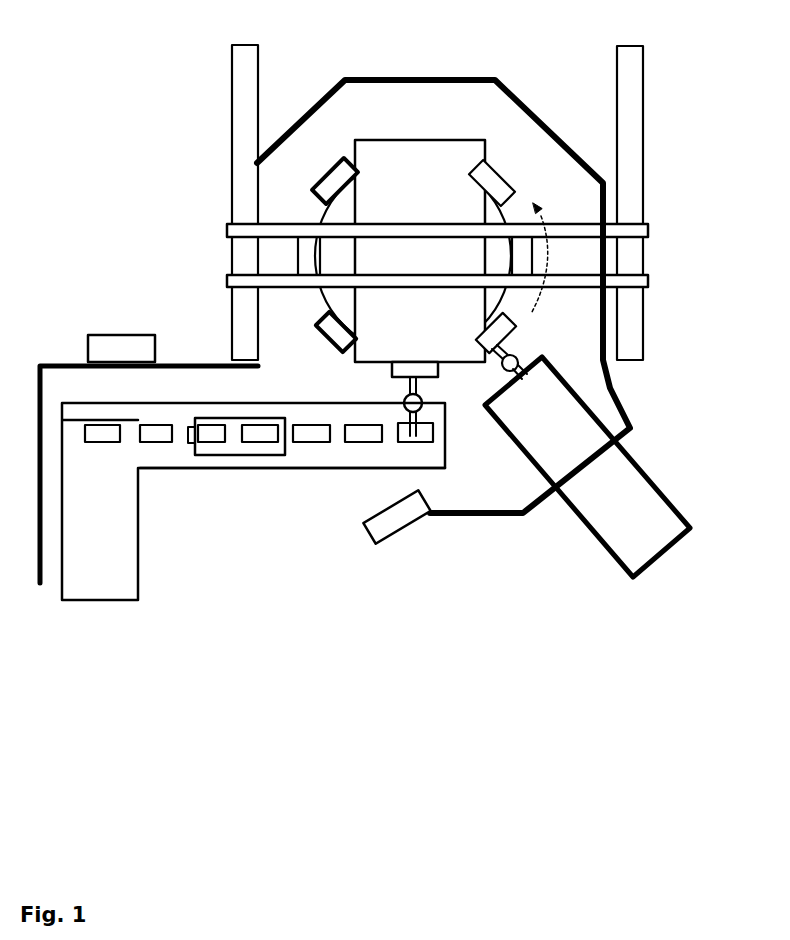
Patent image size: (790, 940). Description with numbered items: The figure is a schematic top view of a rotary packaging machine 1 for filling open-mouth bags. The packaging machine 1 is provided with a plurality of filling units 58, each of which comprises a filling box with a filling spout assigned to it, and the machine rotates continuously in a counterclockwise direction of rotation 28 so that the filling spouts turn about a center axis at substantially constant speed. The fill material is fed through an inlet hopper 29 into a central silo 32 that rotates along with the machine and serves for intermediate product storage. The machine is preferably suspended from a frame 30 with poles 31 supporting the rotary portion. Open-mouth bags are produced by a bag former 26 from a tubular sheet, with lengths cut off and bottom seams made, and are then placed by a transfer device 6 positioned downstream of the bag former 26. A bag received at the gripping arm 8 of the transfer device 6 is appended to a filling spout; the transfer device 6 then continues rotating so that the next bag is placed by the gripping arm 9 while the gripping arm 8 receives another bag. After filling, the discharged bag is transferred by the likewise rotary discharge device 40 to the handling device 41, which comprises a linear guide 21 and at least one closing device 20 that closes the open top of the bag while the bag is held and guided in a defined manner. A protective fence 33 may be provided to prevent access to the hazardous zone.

The packaging machine 1 is at (132, 92).
The transfer device 6 is at (520, 345).
The gripping arm 8 is at (497, 357).
The gripping arm 9 is at (535, 375).
The closing device 20 is at (220, 457).
The linear guide 21 is at (315, 452).
The bag former 26 is at (648, 510).
The direction of rotation 28 is at (570, 215).
The inlet hopper 29 is at (460, 160).
The frame 30 is at (648, 88).
The poles 31 is at (648, 227).
The silo 32 is at (325, 207).
The protective fence 33 is at (637, 410).
The discharge device 40 is at (402, 405).
The handling device 41 is at (253, 488).
The filling units 58 is at (330, 165).